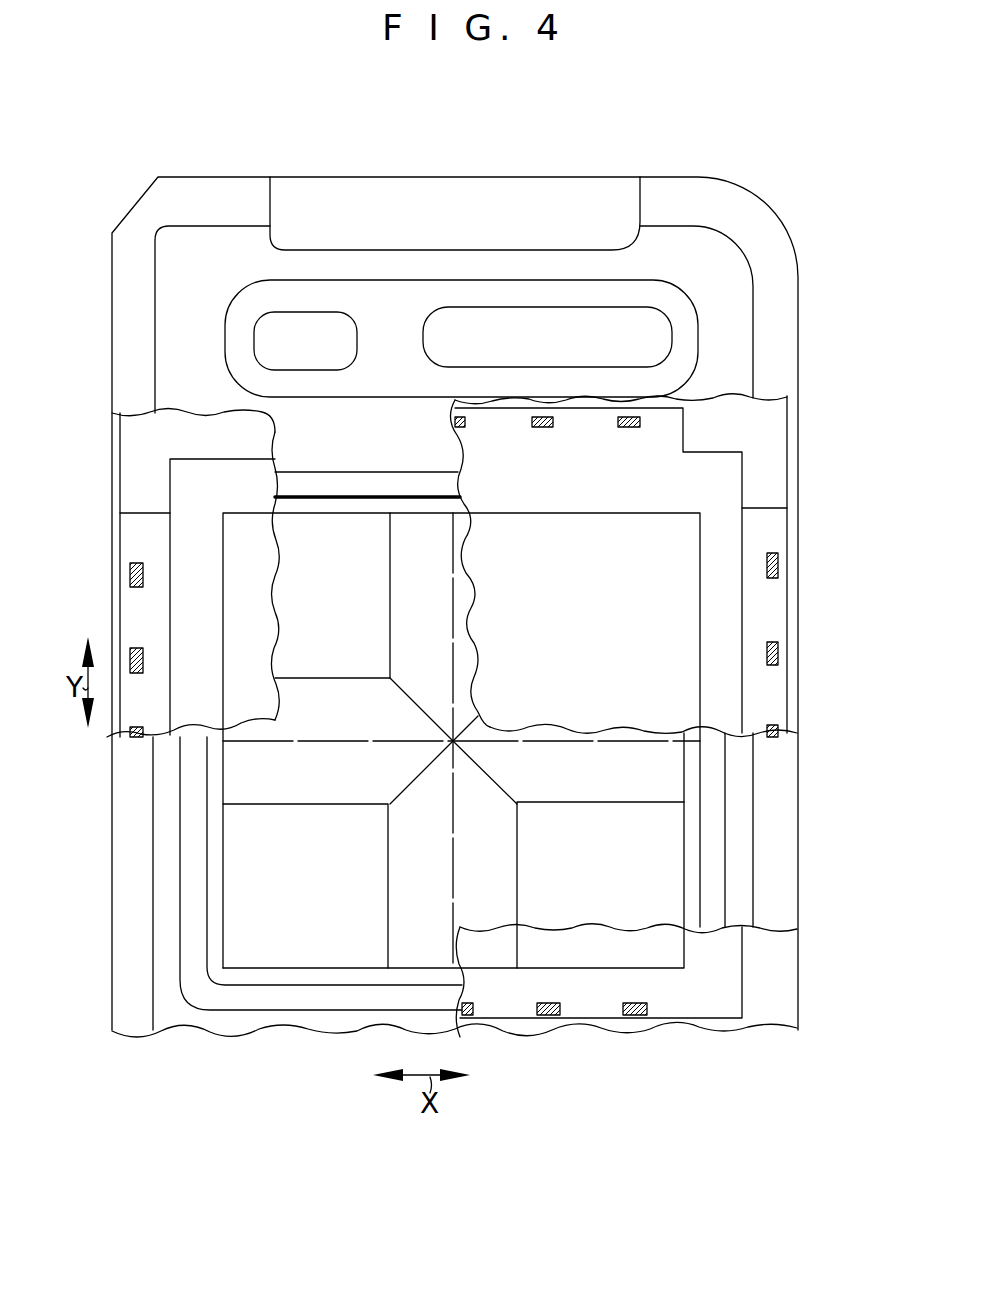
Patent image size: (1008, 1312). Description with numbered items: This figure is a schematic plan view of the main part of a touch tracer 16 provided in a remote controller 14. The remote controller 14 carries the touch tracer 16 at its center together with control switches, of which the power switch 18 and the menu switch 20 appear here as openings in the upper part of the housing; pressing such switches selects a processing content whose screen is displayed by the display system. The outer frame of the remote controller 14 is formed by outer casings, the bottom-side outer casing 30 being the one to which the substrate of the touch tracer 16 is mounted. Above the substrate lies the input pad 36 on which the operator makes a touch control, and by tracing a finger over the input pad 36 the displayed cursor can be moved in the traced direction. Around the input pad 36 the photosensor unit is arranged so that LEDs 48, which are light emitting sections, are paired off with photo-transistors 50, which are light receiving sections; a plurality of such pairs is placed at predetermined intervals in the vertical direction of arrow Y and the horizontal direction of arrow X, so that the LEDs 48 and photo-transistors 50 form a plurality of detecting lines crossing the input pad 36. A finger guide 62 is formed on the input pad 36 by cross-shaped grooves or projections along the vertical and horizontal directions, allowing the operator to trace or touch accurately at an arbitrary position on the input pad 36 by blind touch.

The remote controller 14 is at (803, 203).
The touch tracer 16 is at (150, 840).
The power switch 18 is at (313, 357).
The menu switch 20 is at (649, 332).
The outer casing 30 is at (792, 338).
The input pad 36 is at (653, 855).
The LEDs 48 is at (457, 428).
The photo-transistors 50 is at (780, 565).
The finger guide 62 is at (352, 793).